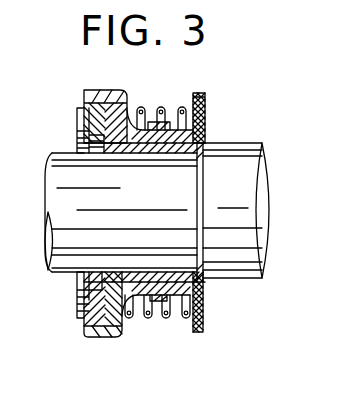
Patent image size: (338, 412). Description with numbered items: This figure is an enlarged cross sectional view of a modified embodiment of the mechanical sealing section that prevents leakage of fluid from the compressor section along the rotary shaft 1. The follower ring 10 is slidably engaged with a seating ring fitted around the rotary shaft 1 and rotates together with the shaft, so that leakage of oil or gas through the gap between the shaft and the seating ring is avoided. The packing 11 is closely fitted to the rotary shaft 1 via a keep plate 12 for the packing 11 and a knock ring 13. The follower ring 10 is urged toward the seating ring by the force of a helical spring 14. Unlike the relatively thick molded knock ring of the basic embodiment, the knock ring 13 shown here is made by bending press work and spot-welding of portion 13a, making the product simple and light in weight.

The rotary shaft 1 is at (262, 222).
The follower ring 10 is at (78, 304).
The packing 11 is at (157, 154).
The keep plate 12 is at (118, 92).
The knock ring 13 is at (197, 96).
The spot-welded portion 13a is at (204, 108).
The helical spring 14 is at (160, 321).